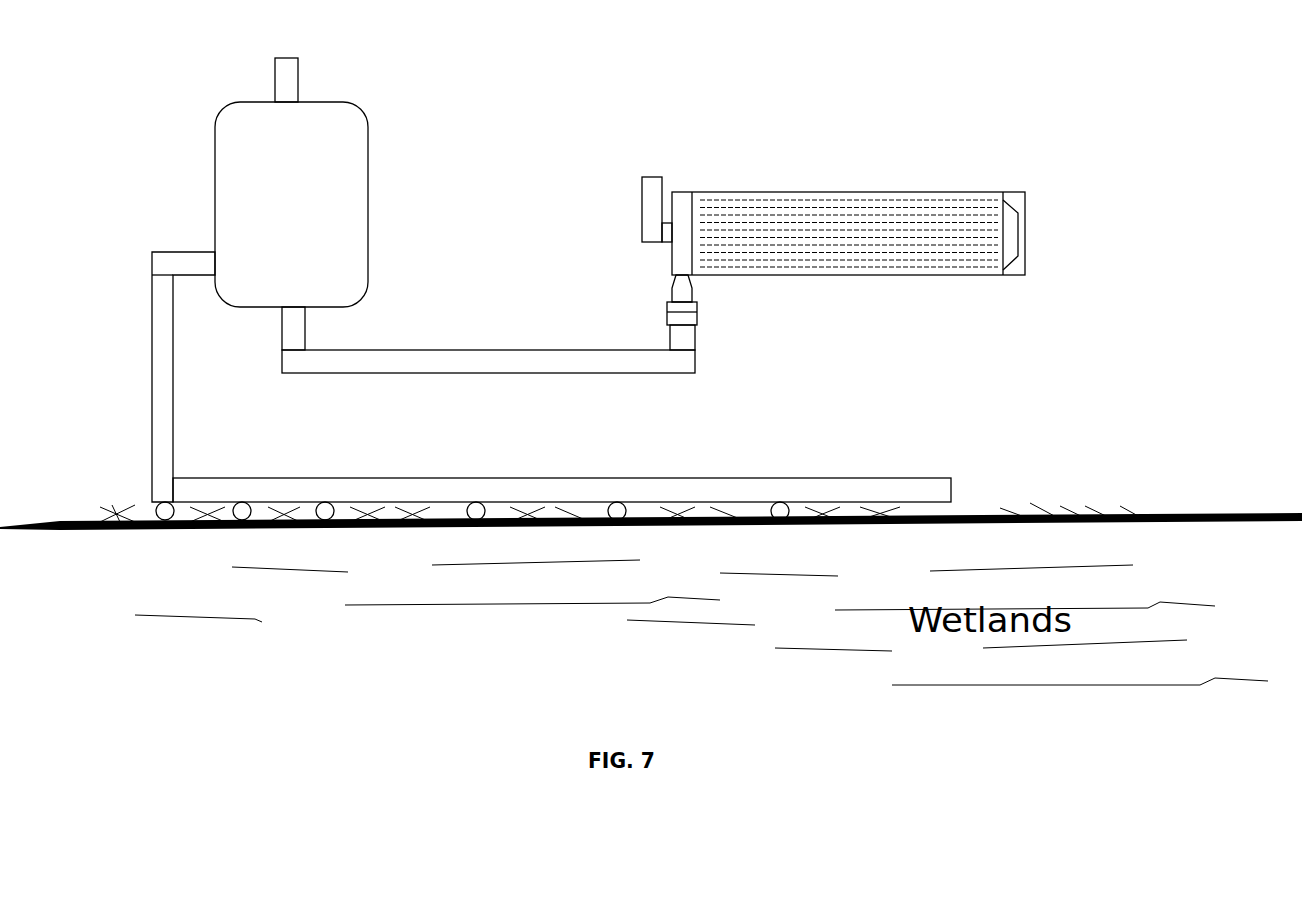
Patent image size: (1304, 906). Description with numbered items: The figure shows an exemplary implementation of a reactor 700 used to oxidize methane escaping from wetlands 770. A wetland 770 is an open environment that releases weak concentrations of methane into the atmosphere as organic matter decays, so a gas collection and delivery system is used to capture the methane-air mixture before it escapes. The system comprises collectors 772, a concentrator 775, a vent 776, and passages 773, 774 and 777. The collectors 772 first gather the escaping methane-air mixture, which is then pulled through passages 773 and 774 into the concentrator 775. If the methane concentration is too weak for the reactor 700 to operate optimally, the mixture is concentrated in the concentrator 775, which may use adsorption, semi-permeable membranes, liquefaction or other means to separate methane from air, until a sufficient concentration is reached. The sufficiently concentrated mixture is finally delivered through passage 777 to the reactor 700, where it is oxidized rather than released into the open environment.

The reactor 700 is at (891, 158).
The wetlands 770 is at (178, 690).
The collectors 772 is at (818, 467).
The passage 773 is at (448, 478).
The passage 774 is at (150, 412).
The concentrator 775 is at (291, 204).
The vent 776 is at (300, 92).
The passage 777 is at (490, 350).